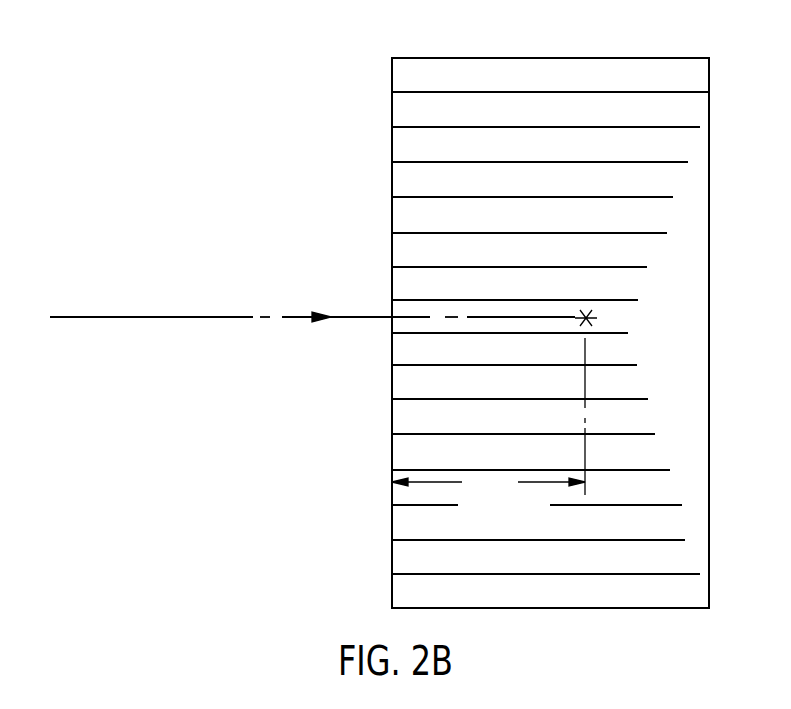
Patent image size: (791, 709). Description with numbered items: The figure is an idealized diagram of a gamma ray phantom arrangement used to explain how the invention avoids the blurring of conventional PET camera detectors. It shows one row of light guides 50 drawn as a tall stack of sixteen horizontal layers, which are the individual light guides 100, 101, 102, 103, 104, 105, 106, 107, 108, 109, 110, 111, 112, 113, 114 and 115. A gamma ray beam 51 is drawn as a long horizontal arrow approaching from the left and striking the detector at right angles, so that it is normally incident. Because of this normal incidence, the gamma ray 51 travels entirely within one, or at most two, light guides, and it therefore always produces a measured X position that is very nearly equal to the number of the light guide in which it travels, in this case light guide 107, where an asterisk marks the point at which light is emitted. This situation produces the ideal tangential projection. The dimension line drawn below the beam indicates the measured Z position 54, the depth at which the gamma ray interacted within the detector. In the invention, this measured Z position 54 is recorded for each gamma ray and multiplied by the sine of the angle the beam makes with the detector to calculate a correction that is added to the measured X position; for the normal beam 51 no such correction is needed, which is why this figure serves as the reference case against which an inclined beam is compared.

The light guides 50 is at (557, 51).
The gamma ray beam 51 is at (172, 316).
The measured Z position 54 is at (488, 424).
The light guide 100 is at (550, 77).
The light guide 101 is at (546, 112).
The light guide 102 is at (540, 147).
The light guide 103 is at (532, 182).
The light guide 104 is at (529, 217).
The light guide 105 is at (520, 252).
The light guide 106 is at (520, 285).
The light guide 107 is at (520, 318).
The light guide 108 is at (520, 350).
The light guide 109 is at (520, 384).
The light guide 110 is at (523, 419).
The light guide 111 is at (531, 455).
The light guide 112 is at (537, 490).
The light guide 113 is at (538, 525).
The light guide 114 is at (546, 559).
The light guide 115 is at (550, 593).